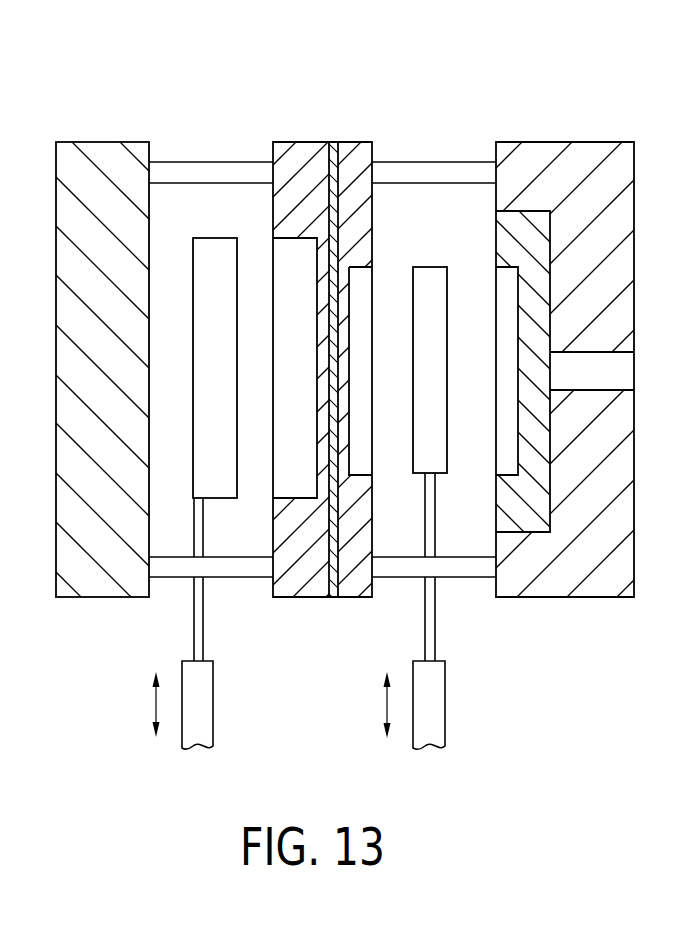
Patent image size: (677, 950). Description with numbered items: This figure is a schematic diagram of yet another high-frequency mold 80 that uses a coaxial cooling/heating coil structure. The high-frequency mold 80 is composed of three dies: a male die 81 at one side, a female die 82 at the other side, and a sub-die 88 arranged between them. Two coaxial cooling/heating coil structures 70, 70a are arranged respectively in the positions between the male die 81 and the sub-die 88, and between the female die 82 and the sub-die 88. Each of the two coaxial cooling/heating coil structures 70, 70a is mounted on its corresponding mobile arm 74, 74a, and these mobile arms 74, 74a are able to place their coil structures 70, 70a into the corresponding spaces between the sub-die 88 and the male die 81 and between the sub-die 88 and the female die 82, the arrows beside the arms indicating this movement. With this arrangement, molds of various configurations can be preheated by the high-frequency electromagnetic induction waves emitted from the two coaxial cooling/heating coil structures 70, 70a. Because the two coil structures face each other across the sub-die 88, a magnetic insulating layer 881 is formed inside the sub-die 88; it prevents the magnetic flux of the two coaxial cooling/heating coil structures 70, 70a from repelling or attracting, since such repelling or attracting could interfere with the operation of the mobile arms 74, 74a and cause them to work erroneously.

The high-frequency mold 80 is at (357, 42).
The male die 81 is at (98, 152).
The female die 82 is at (576, 150).
The sub-die 88 is at (304, 150).
The magnetic insulating layer 881 is at (334, 145).
The coaxial cooling/heating coil structure 70 is at (428, 244).
The coaxial cooling/heating coil structure 70a is at (231, 222).
The mobile arm 74 is at (441, 700).
The mobile arm 74a is at (208, 700).